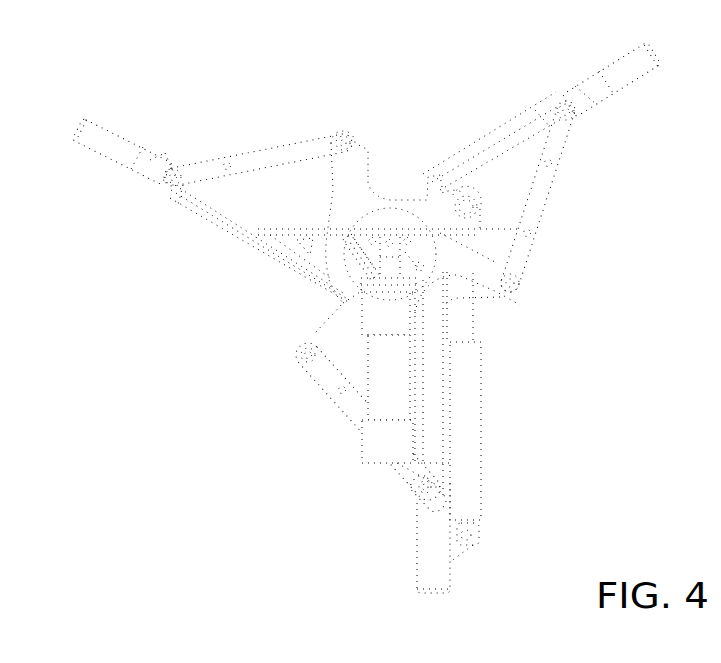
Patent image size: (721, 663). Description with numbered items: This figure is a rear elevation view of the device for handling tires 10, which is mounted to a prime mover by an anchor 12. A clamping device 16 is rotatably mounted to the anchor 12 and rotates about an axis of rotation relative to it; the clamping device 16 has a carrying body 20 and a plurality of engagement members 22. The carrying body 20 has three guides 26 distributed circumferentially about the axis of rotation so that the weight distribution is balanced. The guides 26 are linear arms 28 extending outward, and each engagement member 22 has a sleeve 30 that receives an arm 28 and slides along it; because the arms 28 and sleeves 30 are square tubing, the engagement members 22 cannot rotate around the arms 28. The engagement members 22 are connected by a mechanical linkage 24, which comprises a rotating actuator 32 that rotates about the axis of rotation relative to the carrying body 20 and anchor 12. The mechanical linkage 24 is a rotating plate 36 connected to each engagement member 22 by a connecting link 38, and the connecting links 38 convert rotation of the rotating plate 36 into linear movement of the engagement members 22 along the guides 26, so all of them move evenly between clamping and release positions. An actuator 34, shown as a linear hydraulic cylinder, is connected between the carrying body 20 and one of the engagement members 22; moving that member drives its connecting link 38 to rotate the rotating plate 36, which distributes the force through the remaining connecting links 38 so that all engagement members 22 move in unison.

The device for handling tires 10 is at (157, 400).
The anchor 12 is at (385, 457).
The clamping device 16 is at (175, 178).
The carrying body 20 is at (467, 162).
The engagement members 22 is at (87, 145).
The mechanical linkage 24 is at (492, 275).
The guides 26 is at (208, 208).
The arms 28 is at (224, 215).
The sleeves 30 is at (132, 155).
The rotating actuator 32 is at (325, 340).
The actuator 34 is at (465, 470).
The rotating plate 36 is at (337, 323).
The connecting link 38 is at (267, 155).